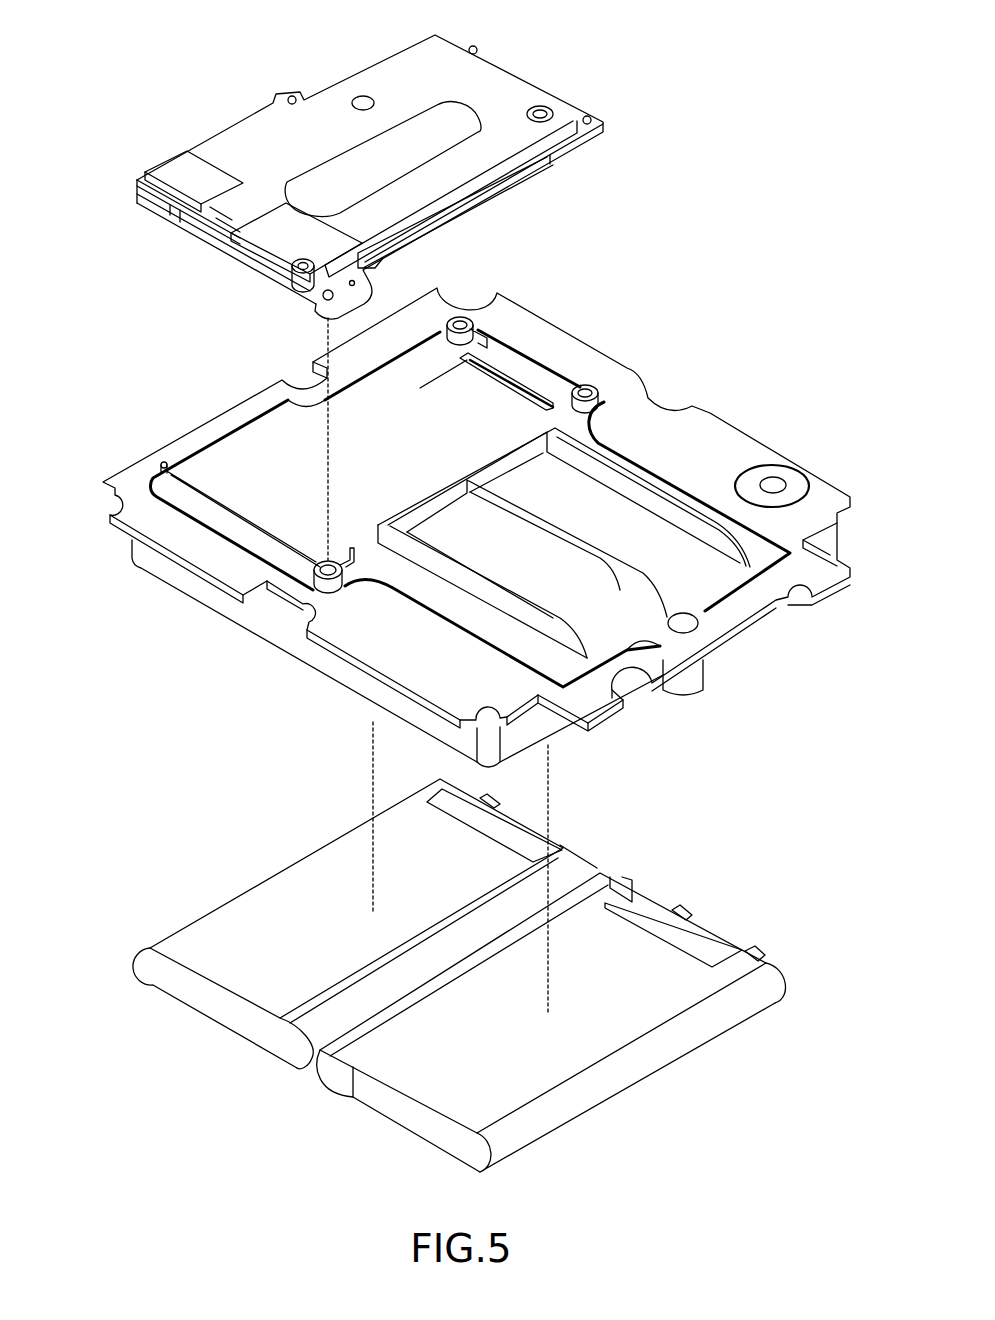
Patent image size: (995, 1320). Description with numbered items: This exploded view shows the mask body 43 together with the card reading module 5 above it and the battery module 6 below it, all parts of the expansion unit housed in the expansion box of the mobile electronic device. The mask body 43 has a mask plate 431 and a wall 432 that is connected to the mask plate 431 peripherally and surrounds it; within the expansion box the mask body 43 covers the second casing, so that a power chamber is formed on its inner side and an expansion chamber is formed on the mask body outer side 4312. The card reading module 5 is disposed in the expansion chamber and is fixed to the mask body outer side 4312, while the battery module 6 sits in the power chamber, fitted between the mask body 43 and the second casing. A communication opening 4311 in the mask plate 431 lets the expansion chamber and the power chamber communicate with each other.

The card reading module 5 is at (531, 70).
The mask body 43 is at (88, 597).
The mask plate 431 is at (178, 563).
The wall 432 is at (210, 598).
The communication opening 4311 is at (518, 386).
The mask body outer side 4312 is at (699, 468).
The battery module 6 is at (375, 1098).